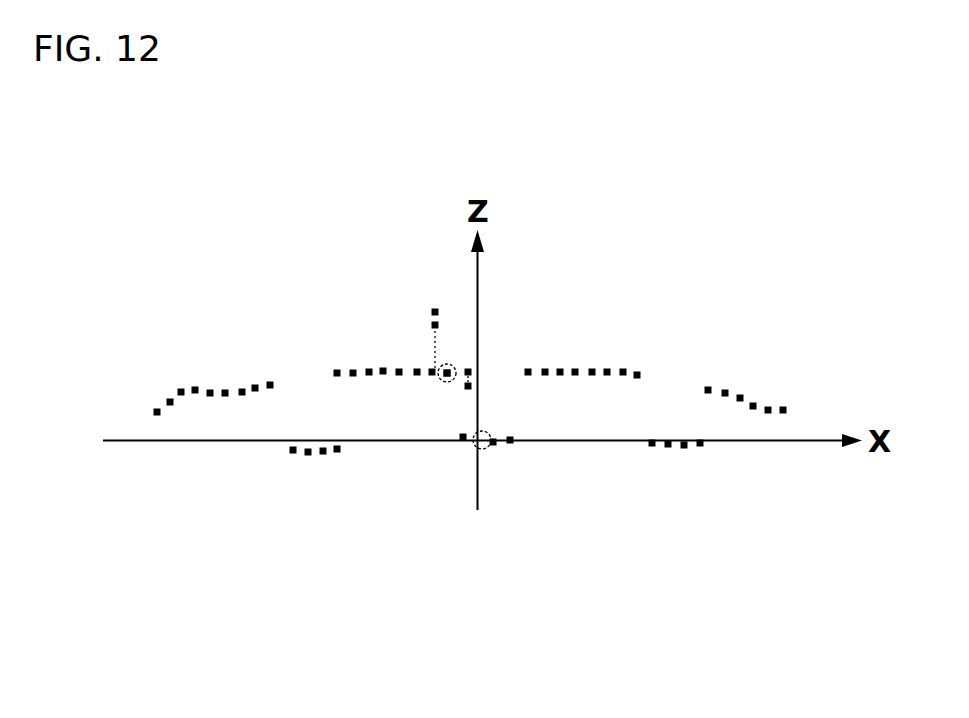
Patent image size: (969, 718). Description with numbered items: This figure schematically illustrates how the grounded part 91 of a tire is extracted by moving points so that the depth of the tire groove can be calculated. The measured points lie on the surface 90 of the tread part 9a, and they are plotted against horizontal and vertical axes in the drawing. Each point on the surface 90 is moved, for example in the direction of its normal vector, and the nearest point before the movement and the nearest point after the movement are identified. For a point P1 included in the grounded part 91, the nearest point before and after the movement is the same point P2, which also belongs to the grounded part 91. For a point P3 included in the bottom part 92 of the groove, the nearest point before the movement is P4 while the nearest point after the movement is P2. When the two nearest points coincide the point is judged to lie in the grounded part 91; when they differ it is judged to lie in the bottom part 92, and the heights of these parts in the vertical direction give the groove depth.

The tread part 9a is at (203, 415).
The surface 90 is at (328, 278).
The grounded part 91 is at (353, 373).
The bottom part 92 is at (320, 443).
The point P1 is at (390, 317).
The point P2 is at (407, 457).
The point P3 is at (448, 515).
The point P4 is at (536, 506).